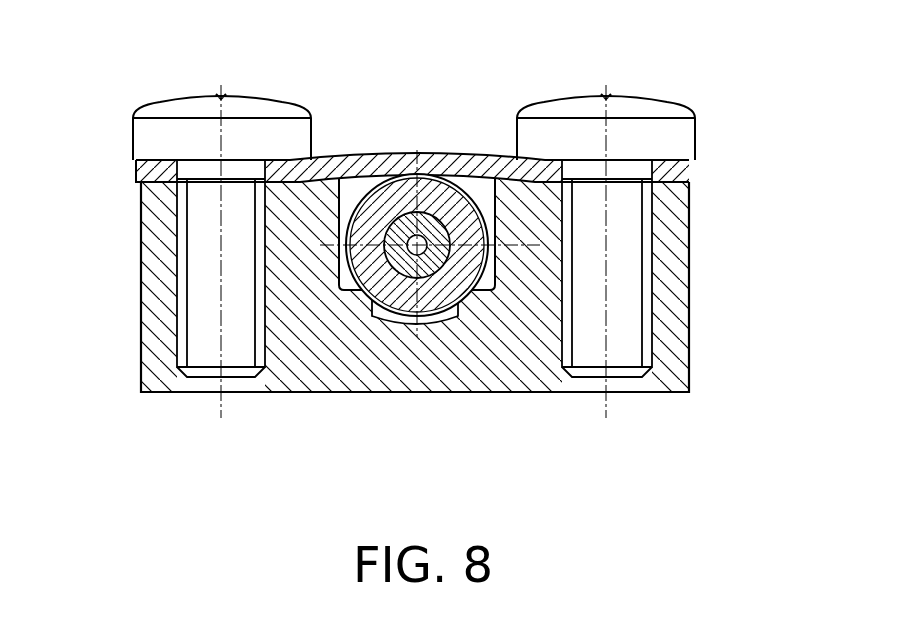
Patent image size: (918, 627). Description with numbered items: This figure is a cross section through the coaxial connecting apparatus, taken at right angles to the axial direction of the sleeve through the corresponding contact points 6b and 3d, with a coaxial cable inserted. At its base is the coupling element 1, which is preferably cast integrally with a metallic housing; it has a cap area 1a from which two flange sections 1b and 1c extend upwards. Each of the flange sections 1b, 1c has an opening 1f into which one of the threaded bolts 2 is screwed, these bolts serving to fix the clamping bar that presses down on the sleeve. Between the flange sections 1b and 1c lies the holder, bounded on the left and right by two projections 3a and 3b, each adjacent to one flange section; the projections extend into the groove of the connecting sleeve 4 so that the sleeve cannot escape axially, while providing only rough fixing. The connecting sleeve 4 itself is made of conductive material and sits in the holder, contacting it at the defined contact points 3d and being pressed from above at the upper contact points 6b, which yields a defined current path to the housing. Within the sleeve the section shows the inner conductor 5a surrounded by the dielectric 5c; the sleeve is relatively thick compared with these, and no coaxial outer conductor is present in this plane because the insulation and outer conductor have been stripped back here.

The coupling element 1 is at (702, 341).
The cap area 1a is at (362, 385).
The flange section 1b is at (153, 266).
The flange section 1c is at (678, 248).
The openings 1f is at (198, 385).
The threaded bolts 2 is at (260, 98).
The projection 3a is at (305, 228).
The projection 3b is at (537, 223).
The contact points 3d is at (372, 290).
The connecting sleeve 4 is at (450, 205).
The inner conductor 5a is at (417, 245).
The dielectric 5c is at (398, 222).
The contact points 6b is at (411, 206).